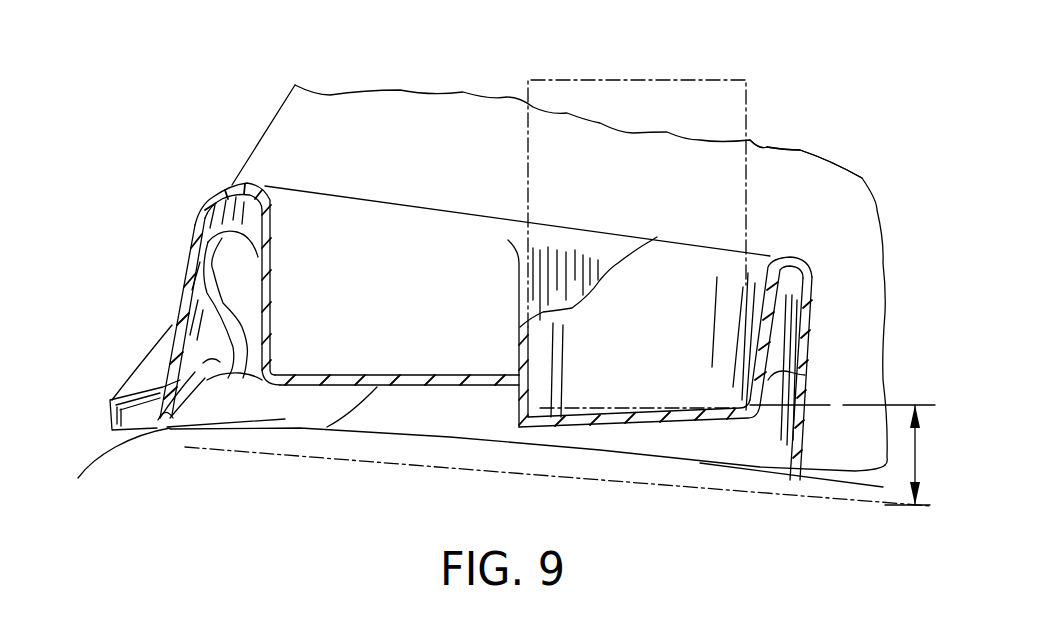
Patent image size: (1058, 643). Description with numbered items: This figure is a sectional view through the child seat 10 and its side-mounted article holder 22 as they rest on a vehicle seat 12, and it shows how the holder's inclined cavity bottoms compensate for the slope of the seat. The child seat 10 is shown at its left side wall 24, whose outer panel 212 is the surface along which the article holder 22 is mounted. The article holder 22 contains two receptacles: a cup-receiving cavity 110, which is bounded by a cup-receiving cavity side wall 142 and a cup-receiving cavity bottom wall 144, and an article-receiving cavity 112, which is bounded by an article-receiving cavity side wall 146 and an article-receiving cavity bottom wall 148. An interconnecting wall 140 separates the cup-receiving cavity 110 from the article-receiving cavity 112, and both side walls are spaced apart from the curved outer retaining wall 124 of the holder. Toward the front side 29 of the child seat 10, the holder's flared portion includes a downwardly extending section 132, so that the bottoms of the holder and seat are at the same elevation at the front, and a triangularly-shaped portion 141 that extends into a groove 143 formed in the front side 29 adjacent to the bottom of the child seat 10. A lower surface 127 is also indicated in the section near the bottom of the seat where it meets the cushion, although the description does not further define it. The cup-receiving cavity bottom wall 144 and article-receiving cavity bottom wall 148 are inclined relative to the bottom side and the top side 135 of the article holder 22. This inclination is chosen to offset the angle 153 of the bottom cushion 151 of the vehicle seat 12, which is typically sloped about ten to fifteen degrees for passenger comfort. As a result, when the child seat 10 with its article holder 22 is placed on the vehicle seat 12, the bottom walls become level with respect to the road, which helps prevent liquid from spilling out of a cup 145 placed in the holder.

The child seat 10 is at (452, 85).
The vehicle seat 12 is at (97, 452).
The side-mounted article holder 22 is at (177, 260).
The left side wall 24 is at (362, 153).
The front side 29 is at (112, 410).
The cup-receiving cavity 110 is at (672, 285).
The article-receiving cavity 112 is at (395, 243).
The outer retaining wall 124 is at (177, 310).
The bottom surface 127 is at (857, 477).
The downwardly extending section 132 is at (170, 413).
The top side 135 is at (788, 257).
The interconnecting wall 140 is at (525, 298).
The triangularly-shaped portion 141 is at (207, 343).
The cup-receiving cavity side wall 142 is at (805, 375).
The groove 143 is at (205, 365).
The cup-receiving cavity bottom wall 144 is at (592, 452).
The cup 145 is at (723, 73).
The article-receiving cavity side wall 146 is at (243, 247).
The article-receiving cavity bottom wall 148 is at (415, 385).
The bottom cushion 151 is at (402, 437).
The angle 153 is at (912, 463).
The outer panel 212 is at (700, 172).